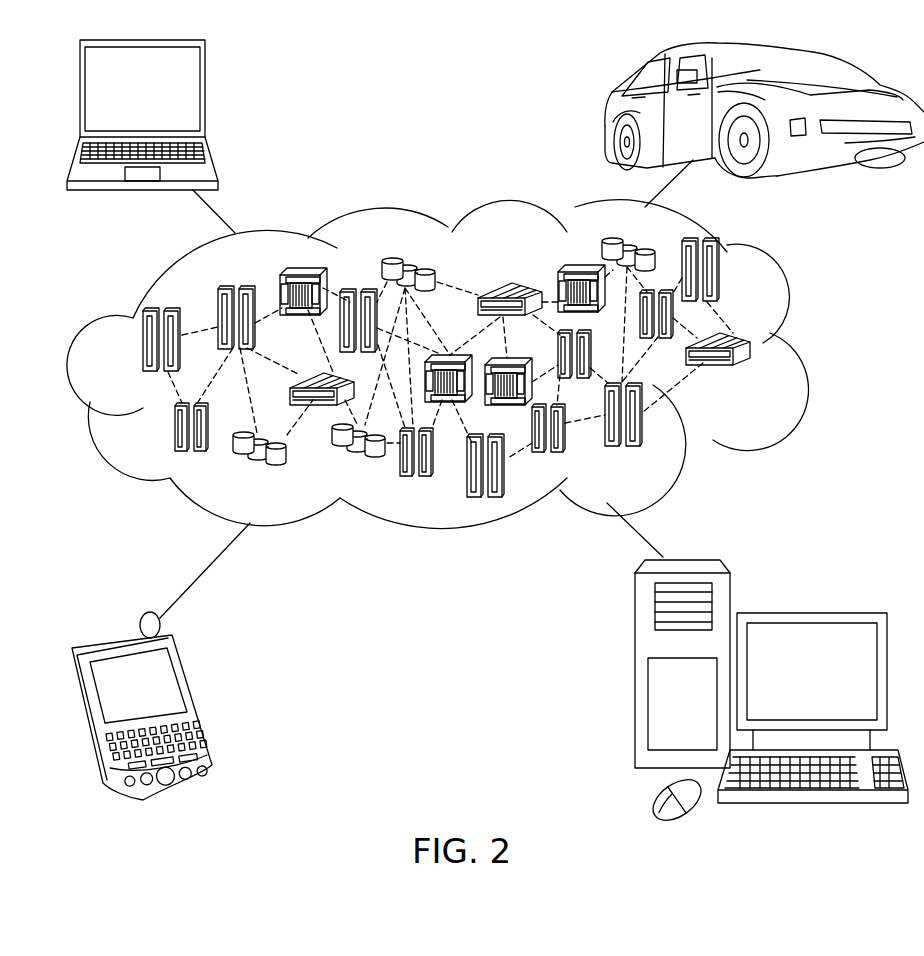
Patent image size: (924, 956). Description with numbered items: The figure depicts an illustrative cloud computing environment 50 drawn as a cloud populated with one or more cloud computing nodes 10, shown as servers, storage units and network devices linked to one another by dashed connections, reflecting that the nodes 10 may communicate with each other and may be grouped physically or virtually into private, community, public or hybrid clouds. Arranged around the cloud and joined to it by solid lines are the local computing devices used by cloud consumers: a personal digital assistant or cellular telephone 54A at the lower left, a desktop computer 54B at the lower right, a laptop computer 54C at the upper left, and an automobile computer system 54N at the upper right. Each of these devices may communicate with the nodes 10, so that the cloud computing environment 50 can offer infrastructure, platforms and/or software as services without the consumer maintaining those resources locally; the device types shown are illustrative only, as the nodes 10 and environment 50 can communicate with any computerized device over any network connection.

The cloud computing nodes 10 is at (777, 382).
The cloud computing environment 50 is at (810, 346).
The personal digital assistant or cellular telephone 54A is at (200, 697).
The desktop computer 54B is at (808, 613).
The laptop computer 54C is at (205, 96).
The automobile computer system 54N is at (607, 112).